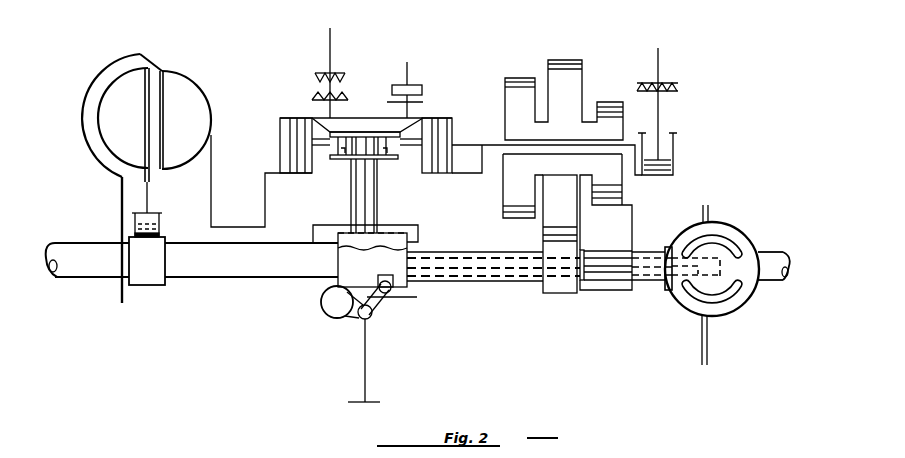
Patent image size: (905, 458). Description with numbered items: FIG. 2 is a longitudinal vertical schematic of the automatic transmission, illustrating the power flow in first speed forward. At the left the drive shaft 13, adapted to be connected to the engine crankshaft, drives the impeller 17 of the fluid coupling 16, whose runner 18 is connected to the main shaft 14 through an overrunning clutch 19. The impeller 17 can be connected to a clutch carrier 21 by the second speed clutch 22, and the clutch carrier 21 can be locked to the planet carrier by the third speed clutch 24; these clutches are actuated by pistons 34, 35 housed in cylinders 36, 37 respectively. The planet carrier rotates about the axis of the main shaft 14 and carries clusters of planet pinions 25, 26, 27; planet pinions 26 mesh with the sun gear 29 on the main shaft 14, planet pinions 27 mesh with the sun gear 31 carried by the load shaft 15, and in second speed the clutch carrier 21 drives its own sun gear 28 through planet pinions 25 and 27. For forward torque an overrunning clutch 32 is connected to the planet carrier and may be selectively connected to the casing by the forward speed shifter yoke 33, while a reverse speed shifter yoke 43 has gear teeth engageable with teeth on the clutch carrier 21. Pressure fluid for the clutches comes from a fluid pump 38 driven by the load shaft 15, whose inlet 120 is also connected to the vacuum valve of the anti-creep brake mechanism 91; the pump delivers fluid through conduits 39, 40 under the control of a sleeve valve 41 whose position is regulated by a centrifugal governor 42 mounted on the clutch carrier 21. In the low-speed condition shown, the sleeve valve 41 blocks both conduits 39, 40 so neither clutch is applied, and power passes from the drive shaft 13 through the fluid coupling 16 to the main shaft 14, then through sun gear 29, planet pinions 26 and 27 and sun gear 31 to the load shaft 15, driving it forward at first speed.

The drive shaft 13 is at (65, 267).
The main shaft 14 is at (212, 267).
The load shaft 15 is at (779, 252).
The fluid coupling 16 is at (175, 64).
The impeller 17 is at (193, 112).
The runner 18 is at (105, 115).
The overrunning clutch 19 is at (160, 221).
The clutch carrier 21 is at (367, 118).
The second speed clutch 22 is at (290, 140).
The third speed clutch 24 is at (440, 147).
The planet pinions 25 is at (520, 82).
The planet pinions 26 is at (566, 62).
The planet pinions 27 is at (606, 103).
The sun gear 28 is at (514, 218).
The sun gear 29 is at (553, 293).
The sun gear 31 is at (603, 198).
The overrunning clutch 32 is at (664, 152).
The forward speed shifter yoke 33 is at (662, 80).
The piston 34 is at (343, 152).
The piston 35 is at (385, 152).
The cylinder 36 is at (326, 126).
The cylinder 37 is at (404, 126).
The fluid pump 38 is at (722, 228).
The conduit 39 is at (603, 281).
The conduit 40 is at (612, 256).
The sleeve valve 41 is at (356, 258).
The centrifugal governor 42 is at (347, 312).
The reverse speed shifter yoke 43 is at (326, 72).
The anti-creep brake mechanism 91 is at (410, 86).
The inlet 120 is at (706, 207).